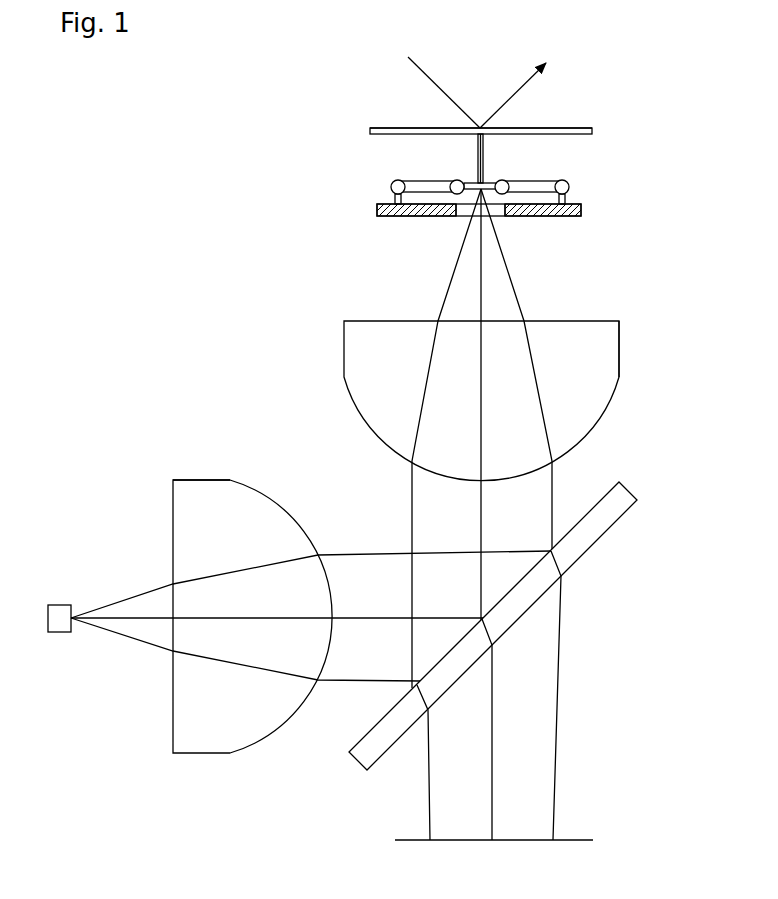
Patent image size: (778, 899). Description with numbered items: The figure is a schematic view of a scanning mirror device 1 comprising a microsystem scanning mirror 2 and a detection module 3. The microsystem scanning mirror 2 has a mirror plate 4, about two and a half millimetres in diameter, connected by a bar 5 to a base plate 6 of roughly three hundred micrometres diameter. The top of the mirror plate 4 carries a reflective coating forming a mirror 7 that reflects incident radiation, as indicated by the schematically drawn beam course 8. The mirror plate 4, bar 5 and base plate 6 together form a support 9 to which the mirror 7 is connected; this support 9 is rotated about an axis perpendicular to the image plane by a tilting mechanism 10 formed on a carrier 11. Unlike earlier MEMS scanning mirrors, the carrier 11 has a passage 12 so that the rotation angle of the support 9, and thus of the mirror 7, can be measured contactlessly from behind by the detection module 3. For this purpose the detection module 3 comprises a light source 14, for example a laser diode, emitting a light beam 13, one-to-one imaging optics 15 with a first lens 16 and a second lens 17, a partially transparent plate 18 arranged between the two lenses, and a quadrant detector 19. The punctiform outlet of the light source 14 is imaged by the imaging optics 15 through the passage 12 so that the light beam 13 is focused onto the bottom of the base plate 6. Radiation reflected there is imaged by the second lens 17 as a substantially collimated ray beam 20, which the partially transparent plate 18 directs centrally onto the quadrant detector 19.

The scanning mirror device 1 is at (201, 324).
The microsystem scanning mirror 2 is at (361, 155).
The detection module 3 is at (339, 361).
The mirror plate 4 is at (592, 131).
The bar 5 is at (478, 162).
The base plate 6 is at (492, 184).
The mirror 7 is at (370, 130).
The beam course 8 is at (429, 78).
The support 9 is at (486, 156).
The tilting mechanism 10 is at (408, 181).
The carrier 11 is at (582, 210).
The passage 12 is at (463, 216).
The light beam 13 is at (348, 553).
The light source 14 is at (56, 605).
The 1:1 imaging optics 15 is at (196, 760).
The first lens 16 is at (192, 478).
The second lens 17 is at (619, 353).
The partially transparent plate 18 is at (632, 492).
The quadrant detector 19 is at (573, 838).
The collimated ray beam 20 is at (558, 670).